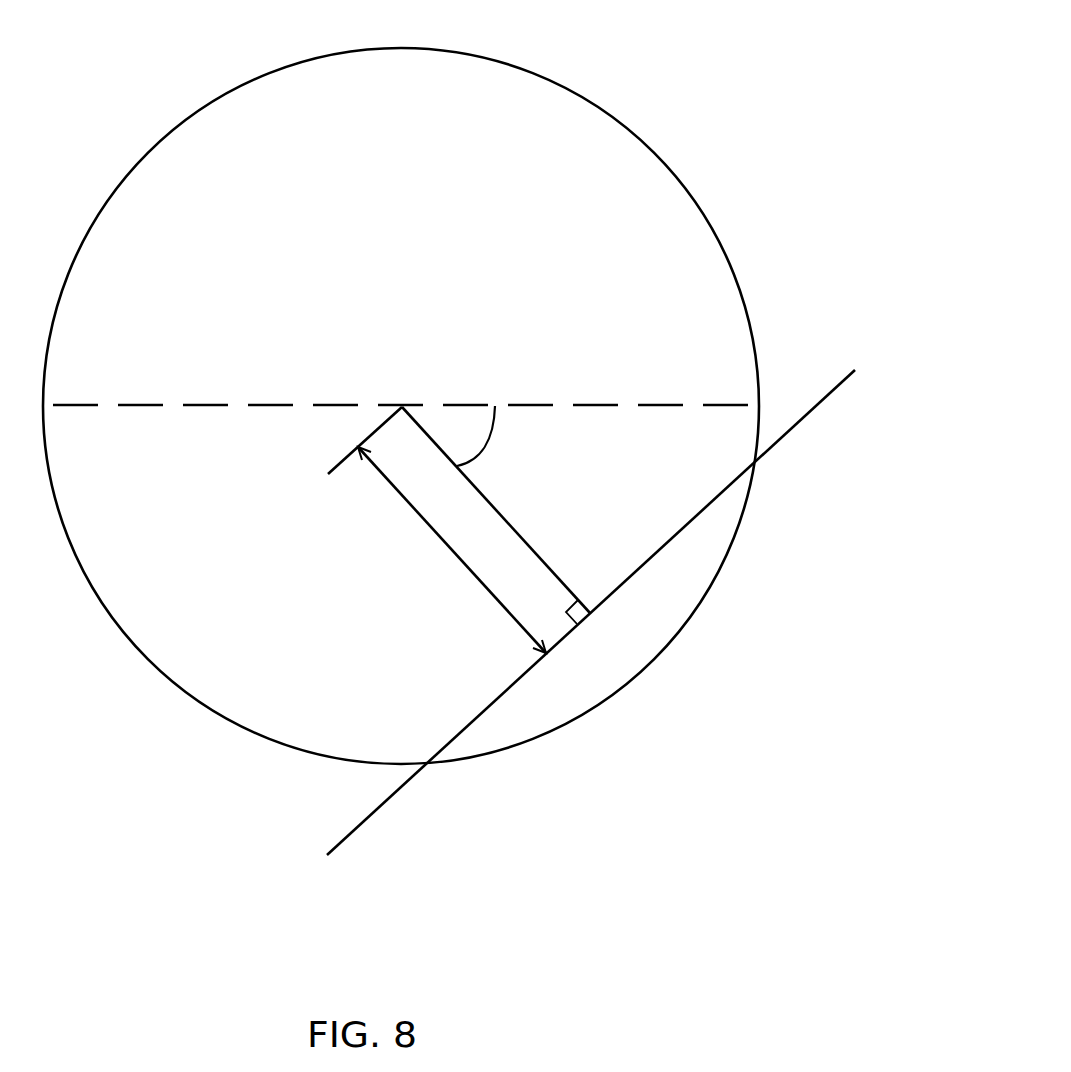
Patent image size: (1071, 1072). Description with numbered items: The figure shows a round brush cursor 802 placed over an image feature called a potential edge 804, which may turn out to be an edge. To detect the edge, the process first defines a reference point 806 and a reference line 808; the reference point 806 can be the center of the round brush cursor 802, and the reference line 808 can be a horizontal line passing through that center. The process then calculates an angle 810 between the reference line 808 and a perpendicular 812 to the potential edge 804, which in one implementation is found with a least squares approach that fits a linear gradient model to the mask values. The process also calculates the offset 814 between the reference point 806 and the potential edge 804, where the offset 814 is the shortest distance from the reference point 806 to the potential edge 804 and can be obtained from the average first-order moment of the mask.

The brush cursor 802 is at (665, 162).
The potential edge 804 is at (822, 400).
The reference point 806 is at (402, 406).
The reference line 808 is at (207, 403).
The angle 810 is at (490, 440).
The perpendicular 812 is at (518, 535).
The offset 814 is at (448, 553).